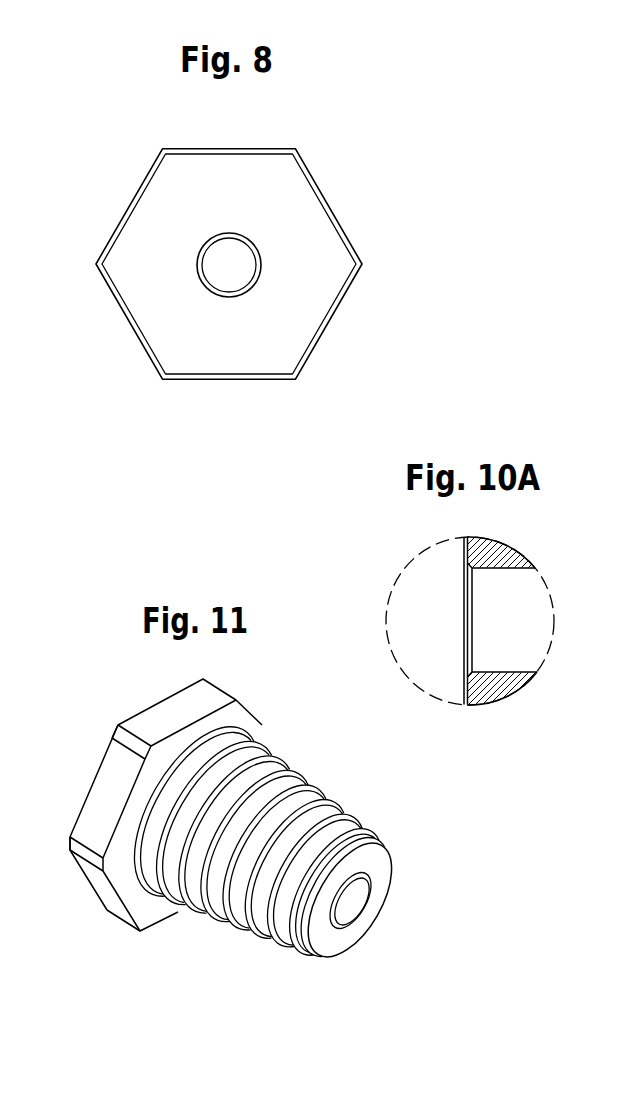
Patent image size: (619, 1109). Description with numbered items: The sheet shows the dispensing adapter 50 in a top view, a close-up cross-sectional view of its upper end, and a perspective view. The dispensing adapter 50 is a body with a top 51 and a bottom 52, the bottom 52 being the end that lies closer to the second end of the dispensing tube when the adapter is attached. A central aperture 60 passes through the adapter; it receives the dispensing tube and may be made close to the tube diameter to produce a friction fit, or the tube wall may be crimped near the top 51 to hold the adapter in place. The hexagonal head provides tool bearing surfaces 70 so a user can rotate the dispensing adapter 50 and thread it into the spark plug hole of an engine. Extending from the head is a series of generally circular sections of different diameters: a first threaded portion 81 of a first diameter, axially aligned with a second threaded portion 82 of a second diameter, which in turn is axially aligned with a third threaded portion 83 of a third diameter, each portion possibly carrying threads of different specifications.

In FIG. 8, the dispensing adapter 50 is at (274, 236).
In FIG. 10A, the dispensing adapter 50 is at (492, 646).
In FIG. 11, the dispensing adapter 50 is at (283, 805).
In FIG. 8, the top 51 is at (315, 277).
In FIG. 11, the bottom 52 is at (382, 910).
In FIG. 8, the central aperture 60 is at (239, 247).
In FIG. 10A, the central aperture 60 is at (532, 603).
In FIG. 11, the central aperture 60 is at (357, 892).
In FIG. 8, the tool bearing surfaces 70 is at (320, 338).
In FIG. 11, the first threaded portion 81 is at (360, 827).
In FIG. 11, the second threaded portion 82 is at (322, 792).
In FIG. 11, the third threaded portion 83 is at (265, 735).